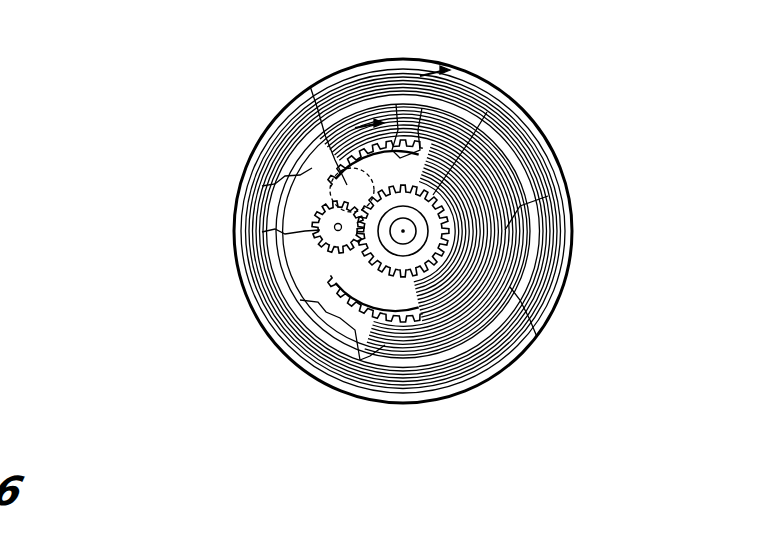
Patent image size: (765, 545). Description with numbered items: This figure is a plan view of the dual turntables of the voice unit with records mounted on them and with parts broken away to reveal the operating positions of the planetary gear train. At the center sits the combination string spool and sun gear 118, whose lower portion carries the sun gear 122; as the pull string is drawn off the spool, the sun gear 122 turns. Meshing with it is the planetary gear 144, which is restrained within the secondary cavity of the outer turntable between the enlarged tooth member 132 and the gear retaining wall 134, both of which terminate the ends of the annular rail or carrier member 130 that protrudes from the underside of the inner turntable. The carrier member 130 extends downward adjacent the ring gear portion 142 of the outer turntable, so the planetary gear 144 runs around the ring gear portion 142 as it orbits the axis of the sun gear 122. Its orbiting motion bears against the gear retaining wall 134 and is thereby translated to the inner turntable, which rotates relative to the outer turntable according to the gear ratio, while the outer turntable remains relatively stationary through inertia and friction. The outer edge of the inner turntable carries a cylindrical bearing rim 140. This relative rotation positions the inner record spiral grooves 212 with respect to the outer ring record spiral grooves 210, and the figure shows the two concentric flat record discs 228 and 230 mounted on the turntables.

The string spool 118 is at (487, 112).
The sun gear 122 is at (352, 202).
The carrier member 130 is at (370, 300).
The tooth member 132 is at (332, 182).
The gear retaining wall 134 is at (337, 270).
The cylindrical bearing rim 140 is at (538, 337).
The ring gear portion 142 is at (398, 104).
The planetary gear 144 is at (314, 228).
The outer ring record spiral grooves 210 is at (533, 108).
The inner record spiral grooves 212 is at (520, 205).
The record disc 228 is at (574, 287).
The record disc 230 is at (389, 337).